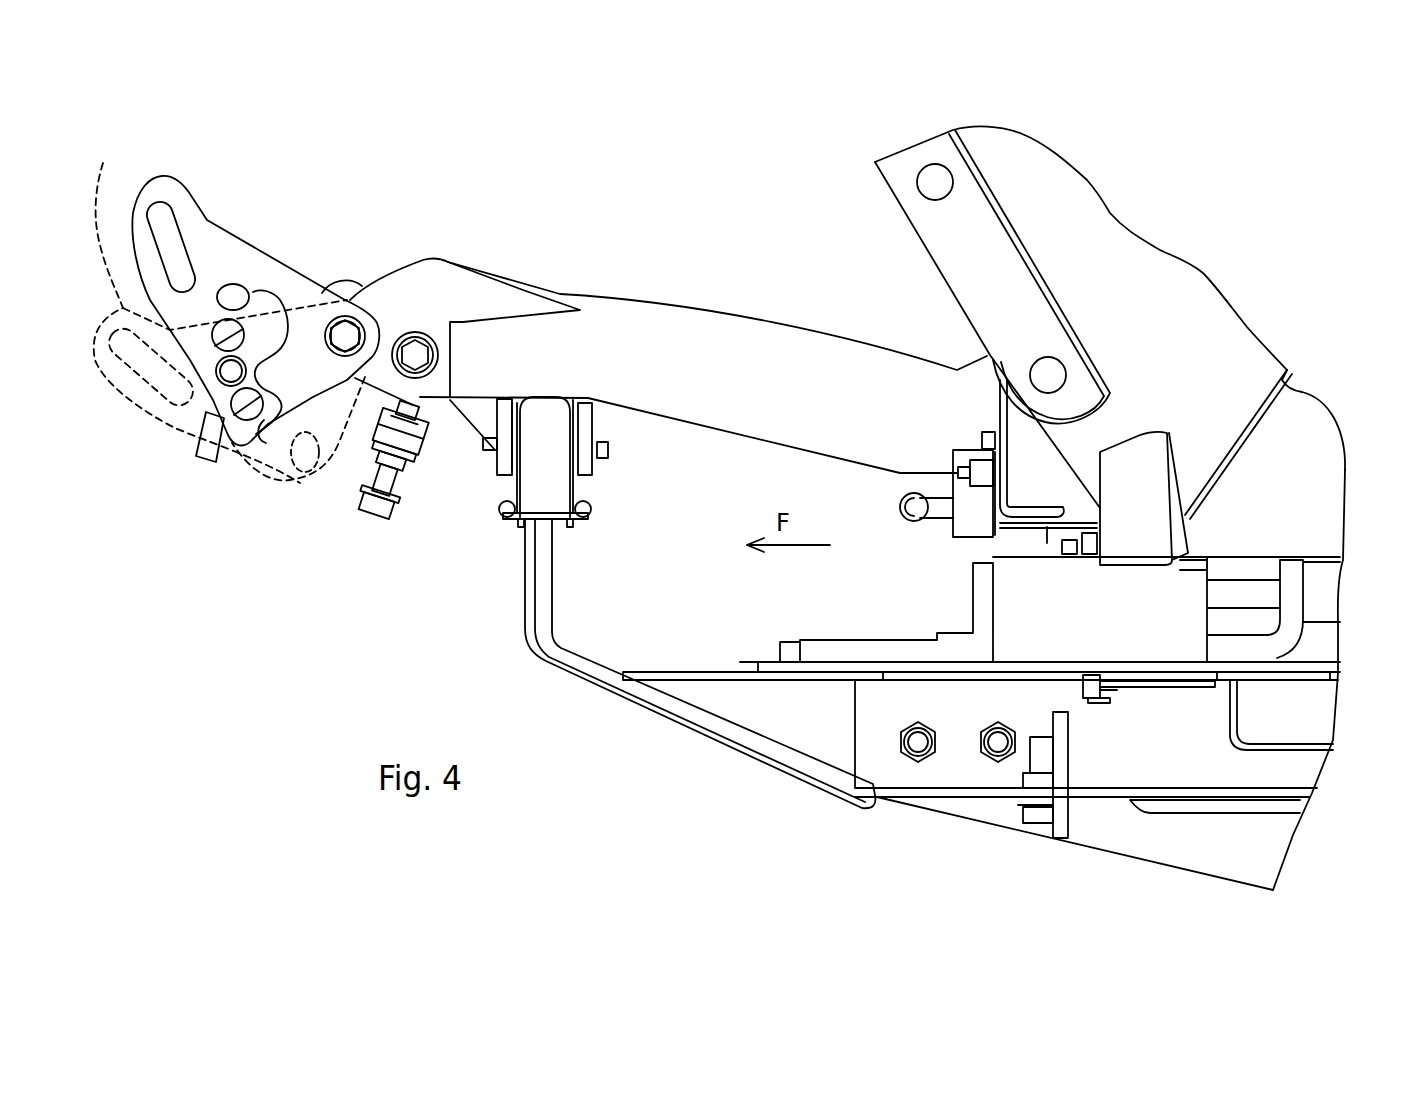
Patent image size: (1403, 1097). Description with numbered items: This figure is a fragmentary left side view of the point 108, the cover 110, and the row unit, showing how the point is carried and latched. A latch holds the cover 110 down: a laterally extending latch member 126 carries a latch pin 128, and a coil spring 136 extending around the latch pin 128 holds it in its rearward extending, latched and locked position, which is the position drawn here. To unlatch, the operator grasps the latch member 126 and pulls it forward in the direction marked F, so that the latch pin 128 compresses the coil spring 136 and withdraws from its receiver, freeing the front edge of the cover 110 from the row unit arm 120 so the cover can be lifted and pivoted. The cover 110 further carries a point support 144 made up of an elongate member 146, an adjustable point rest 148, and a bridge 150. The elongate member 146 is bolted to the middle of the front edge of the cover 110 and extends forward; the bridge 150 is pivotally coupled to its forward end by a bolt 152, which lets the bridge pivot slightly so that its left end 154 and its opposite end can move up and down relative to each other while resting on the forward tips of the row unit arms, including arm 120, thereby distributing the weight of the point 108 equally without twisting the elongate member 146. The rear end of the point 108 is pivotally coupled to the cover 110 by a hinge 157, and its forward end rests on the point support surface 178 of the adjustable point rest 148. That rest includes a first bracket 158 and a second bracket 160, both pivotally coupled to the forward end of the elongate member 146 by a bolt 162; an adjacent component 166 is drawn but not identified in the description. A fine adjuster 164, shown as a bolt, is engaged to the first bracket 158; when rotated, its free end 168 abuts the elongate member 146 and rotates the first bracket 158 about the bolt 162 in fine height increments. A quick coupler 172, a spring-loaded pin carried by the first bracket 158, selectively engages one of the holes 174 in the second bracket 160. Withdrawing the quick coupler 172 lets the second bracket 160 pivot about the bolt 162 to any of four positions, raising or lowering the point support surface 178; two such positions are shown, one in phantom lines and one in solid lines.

The point 108 is at (1080, 274).
The cover 110 is at (1257, 494).
The row unit arm 120 is at (547, 590).
The latch member 126 is at (903, 502).
The latch pin 128 is at (940, 517).
The coil spring 136 is at (1003, 553).
The point support 144 is at (660, 222).
The elongate member 146 is at (716, 314).
The adjustable point rest 148 is at (353, 223).
The bridge 150 is at (553, 428).
The bolt 152 is at (483, 457).
The left end 154 is at (557, 488).
The hinge 157 is at (1122, 443).
The first bracket 158 is at (363, 428).
The second bracket 160 is at (217, 248).
The bolt 162 is at (358, 333).
The fine adjuster 164 is at (392, 482).
The bolt 166 is at (414, 354).
The free end 168 is at (410, 404).
The quick coupler 172 is at (207, 458).
The holes 174 is at (264, 364).
The point support surface 178 is at (210, 123).